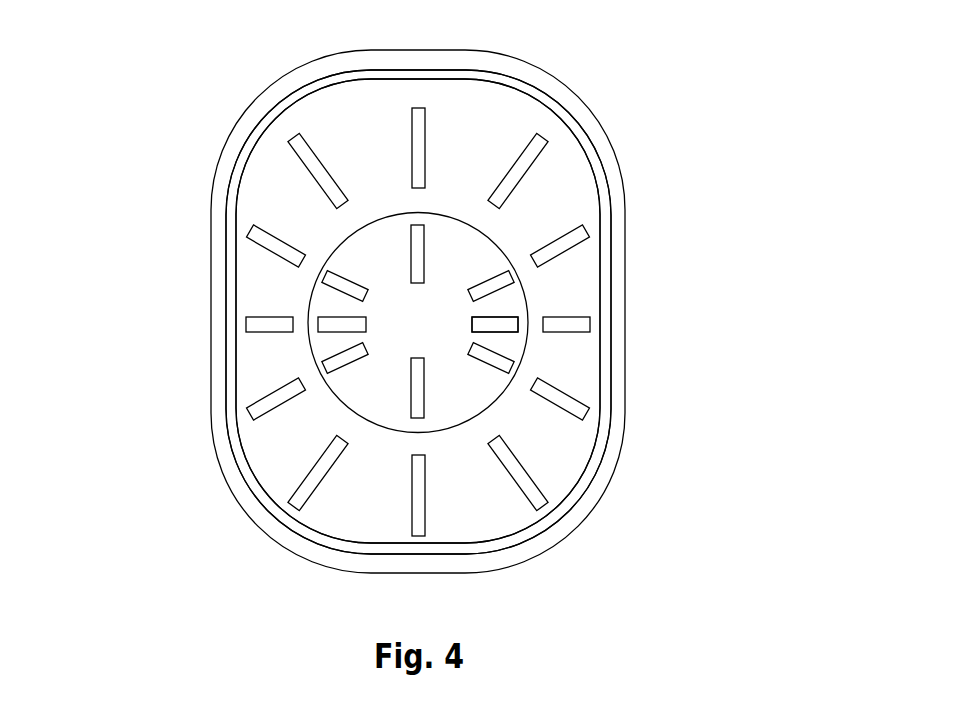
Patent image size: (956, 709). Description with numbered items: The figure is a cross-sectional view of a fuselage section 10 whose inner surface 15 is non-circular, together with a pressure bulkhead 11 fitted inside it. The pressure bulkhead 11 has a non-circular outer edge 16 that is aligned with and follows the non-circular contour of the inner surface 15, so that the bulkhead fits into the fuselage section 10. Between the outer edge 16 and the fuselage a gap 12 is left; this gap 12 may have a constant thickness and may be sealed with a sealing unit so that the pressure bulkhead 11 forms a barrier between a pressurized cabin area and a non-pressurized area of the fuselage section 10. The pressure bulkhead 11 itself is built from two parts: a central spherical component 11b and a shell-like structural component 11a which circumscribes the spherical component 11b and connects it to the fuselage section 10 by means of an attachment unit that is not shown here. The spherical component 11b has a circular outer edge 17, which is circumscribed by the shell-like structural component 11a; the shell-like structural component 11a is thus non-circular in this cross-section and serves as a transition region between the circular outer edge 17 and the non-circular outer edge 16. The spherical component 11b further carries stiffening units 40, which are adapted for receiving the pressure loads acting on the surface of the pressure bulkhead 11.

The fuselage section 10 is at (617, 250).
The pressure bulkhead 11 is at (474, 138).
The shell-like structural component 11a is at (543, 202).
The spherical component 11b is at (507, 343).
The gap 12 is at (262, 125).
The inner surface 15 is at (270, 500).
The outer edge 16 is at (237, 284).
The circular outer edge 17 is at (493, 413).
The stiffening units 40 is at (489, 317).